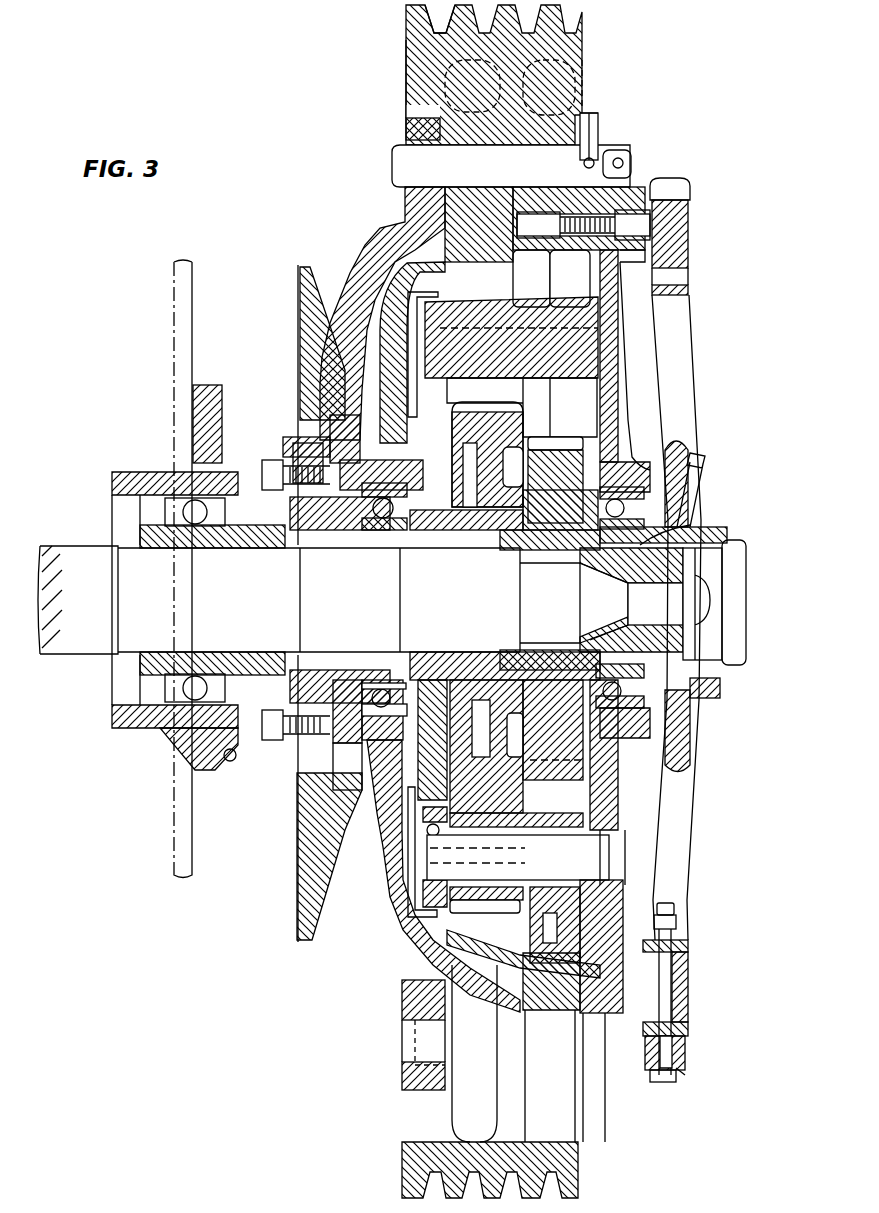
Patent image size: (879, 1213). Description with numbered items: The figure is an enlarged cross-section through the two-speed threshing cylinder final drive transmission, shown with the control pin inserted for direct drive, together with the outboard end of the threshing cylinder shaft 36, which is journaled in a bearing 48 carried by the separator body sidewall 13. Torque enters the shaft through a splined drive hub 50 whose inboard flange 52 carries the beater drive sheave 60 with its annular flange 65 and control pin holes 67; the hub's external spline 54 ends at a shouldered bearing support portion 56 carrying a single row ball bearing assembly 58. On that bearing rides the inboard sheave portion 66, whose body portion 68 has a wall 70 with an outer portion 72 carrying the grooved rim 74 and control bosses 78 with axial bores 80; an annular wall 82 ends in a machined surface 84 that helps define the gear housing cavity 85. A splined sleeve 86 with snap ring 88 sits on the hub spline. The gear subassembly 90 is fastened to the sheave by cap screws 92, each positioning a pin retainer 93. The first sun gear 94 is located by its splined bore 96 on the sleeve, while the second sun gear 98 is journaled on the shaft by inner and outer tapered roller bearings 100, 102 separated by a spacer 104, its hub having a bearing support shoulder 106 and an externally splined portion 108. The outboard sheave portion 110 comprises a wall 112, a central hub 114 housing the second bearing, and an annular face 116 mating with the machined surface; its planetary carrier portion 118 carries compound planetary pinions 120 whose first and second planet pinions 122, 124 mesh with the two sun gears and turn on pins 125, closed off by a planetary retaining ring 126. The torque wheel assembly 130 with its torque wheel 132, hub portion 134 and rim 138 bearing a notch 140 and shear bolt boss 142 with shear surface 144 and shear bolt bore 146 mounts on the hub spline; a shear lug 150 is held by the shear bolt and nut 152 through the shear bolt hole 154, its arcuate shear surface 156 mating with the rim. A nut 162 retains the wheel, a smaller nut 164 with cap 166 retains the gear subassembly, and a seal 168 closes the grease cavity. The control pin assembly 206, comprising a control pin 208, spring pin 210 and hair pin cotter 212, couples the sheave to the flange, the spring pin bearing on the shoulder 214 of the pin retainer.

The separator body sidewall 13 is at (174, 334).
The threshing cylinder shaft 36 is at (80, 544).
The bearing 48 is at (195, 462).
The splined drive hub 50 is at (290, 480).
The flange 52 is at (313, 735).
The external spline 54 is at (455, 560).
The shouldered bearing support portion 56 is at (380, 537).
The single row ball bearing assembly 58 is at (386, 498).
The beater drive sheave 60 is at (289, 308).
The annular flange 65 is at (404, 205).
The inboard transmission assembly sheave portion 66 is at (397, 85).
The holes 67 is at (408, 142).
The body portion 68 is at (398, 106).
The wall 70 is at (432, 270).
The outer portion 72 is at (496, 601).
The rim 74 is at (412, 35).
The control bosses 78 is at (586, 96).
The bore 80 is at (545, 203).
The annular wall 82 is at (572, 1010).
The machined surface 84 is at (600, 965).
The gear housing cavity 85 is at (453, 906).
The splined sleeve 86 is at (405, 718).
The snap ring 88 is at (478, 468).
The gear subassembly 90 is at (690, 995).
The cap screws 92 is at (652, 226).
The pin retainer 93 is at (642, 190).
The first sun gear 94 is at (478, 398).
The internally splined bore 96 is at (520, 497).
The second sun gear 98 is at (560, 436).
The inner tapered roller bearing 100 is at (553, 567).
The outer tapered roller bearing 102 is at (663, 587).
The spacer 104 is at (608, 577).
The bearing support shoulder 106 is at (600, 640).
The externally splined portion 108 is at (694, 702).
The sheave body outboard portion 110 is at (639, 421).
The wall 112 is at (620, 372).
The central hub 114 is at (690, 455).
The annular face 116 is at (598, 1020).
The planetary carrier portion 118 is at (526, 310).
The compound planetary pinions 120 is at (385, 962).
The first planet pinion 122 is at (530, 945).
The second planet pinion 124 is at (555, 940).
The pins 125 is at (518, 857).
The planetary retaining ring 126 is at (400, 393).
The torque wheel assembly 130 is at (718, 403).
The torque wheel 132 is at (712, 366).
The hub portion 134 is at (706, 496).
The rim 138 is at (690, 258).
The notch 140 is at (691, 186).
The shear bolt boss 142 is at (690, 975).
The shear surface 144 is at (690, 1032).
The shear bolt bore 146 is at (690, 947).
The shear lug 150 is at (698, 1072).
The shear bolt and nut 152 is at (660, 1084).
The shear bolt hole 154 is at (685, 1082).
The arcuate shear surface 156 is at (692, 1057).
The nut 162 is at (722, 690).
The nut 164 is at (724, 573).
The cap 166 is at (747, 606).
The seal 168 is at (545, 680).
The control pin assembly 206 is at (658, 125).
The control pin 208 is at (392, 162).
The spring pin 210 is at (624, 156).
The hair pin cotter 212 is at (598, 118).
The shoulder 214 is at (584, 166).